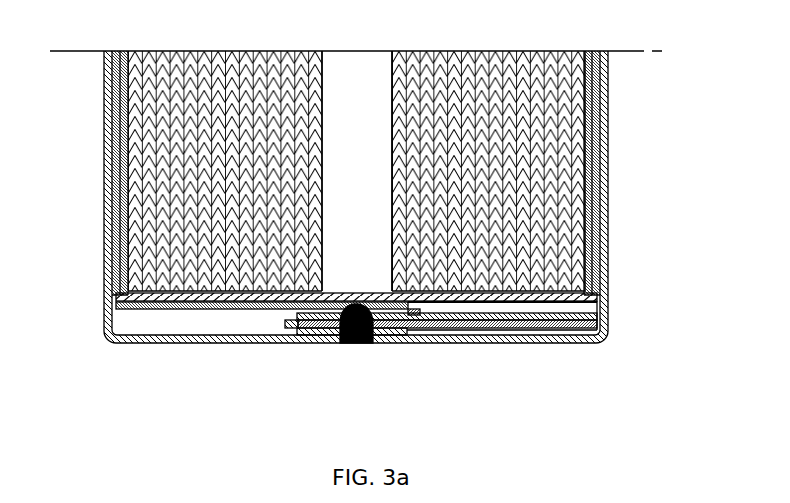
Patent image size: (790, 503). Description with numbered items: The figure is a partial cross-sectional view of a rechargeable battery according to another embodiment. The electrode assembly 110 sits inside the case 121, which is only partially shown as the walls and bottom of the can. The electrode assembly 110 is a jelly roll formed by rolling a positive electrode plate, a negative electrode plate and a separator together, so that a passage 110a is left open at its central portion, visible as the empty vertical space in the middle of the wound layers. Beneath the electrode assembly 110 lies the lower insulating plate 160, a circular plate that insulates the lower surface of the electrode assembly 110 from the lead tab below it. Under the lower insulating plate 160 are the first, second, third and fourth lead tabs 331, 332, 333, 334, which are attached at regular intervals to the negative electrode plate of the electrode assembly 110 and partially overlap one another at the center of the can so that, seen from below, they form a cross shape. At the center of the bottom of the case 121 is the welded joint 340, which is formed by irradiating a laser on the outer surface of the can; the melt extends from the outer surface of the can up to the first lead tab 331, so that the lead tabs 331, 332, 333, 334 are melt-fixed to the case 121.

The electrode assembly 110 is at (614, 166).
The passage 110a is at (368, 222).
The case 121 is at (594, 105).
The lower insulating plate 160 is at (600, 297).
The first lead tab 331 is at (215, 312).
The second lead tab 332 is at (307, 316).
The third lead tab 333 is at (287, 328).
The fourth lead tab 334 is at (397, 336).
The welded joint 340 is at (354, 343).